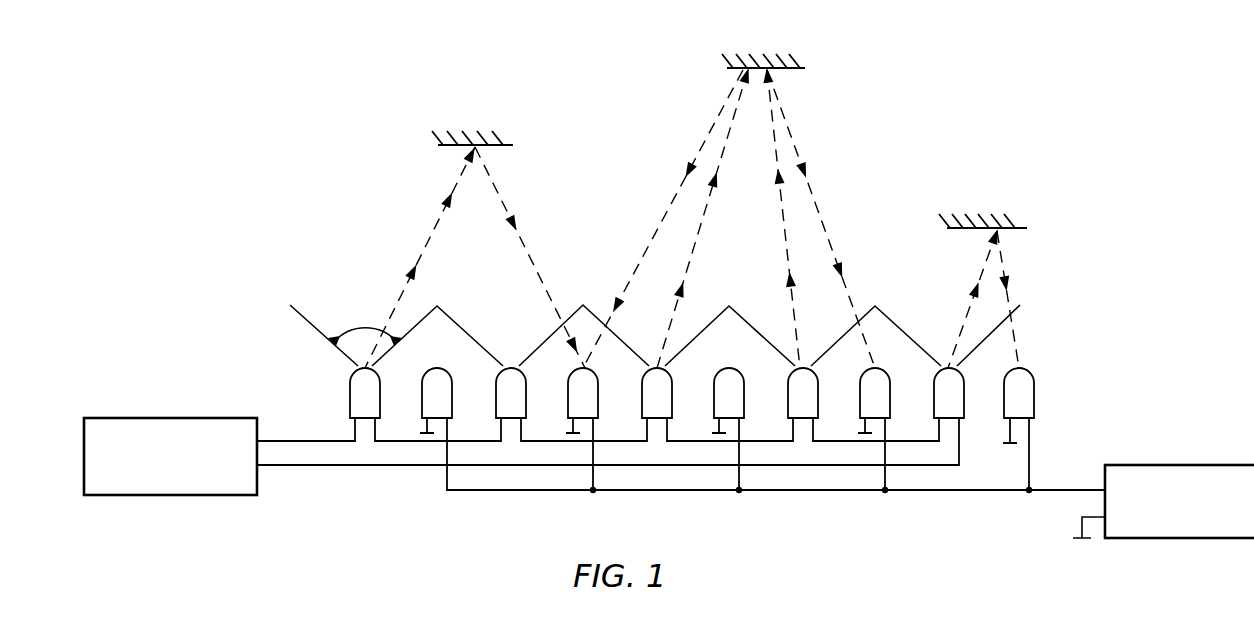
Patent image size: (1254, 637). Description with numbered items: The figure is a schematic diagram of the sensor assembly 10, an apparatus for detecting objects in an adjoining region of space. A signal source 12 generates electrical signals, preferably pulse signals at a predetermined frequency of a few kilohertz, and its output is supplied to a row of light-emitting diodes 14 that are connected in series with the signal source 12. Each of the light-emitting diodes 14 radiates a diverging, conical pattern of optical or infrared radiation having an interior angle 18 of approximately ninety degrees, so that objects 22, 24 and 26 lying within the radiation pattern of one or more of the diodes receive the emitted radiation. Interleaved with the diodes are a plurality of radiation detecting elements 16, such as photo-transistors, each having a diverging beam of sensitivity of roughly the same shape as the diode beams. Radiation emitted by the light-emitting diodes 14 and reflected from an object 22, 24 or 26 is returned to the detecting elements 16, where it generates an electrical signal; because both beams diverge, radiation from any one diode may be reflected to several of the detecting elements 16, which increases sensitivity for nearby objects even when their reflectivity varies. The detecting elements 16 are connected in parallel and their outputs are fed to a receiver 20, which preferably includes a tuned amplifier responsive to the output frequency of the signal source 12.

The sensor assembly 10 is at (546, 34).
The signal source 12 is at (204, 397).
The light-emitting diodes 14 is at (343, 400).
The radiation detecting elements 16 is at (422, 395).
The interior angle 18 is at (365, 322).
The receiver 20 is at (1202, 464).
The object 22 is at (504, 138).
The object 24 is at (797, 63).
The object 26 is at (1017, 221).